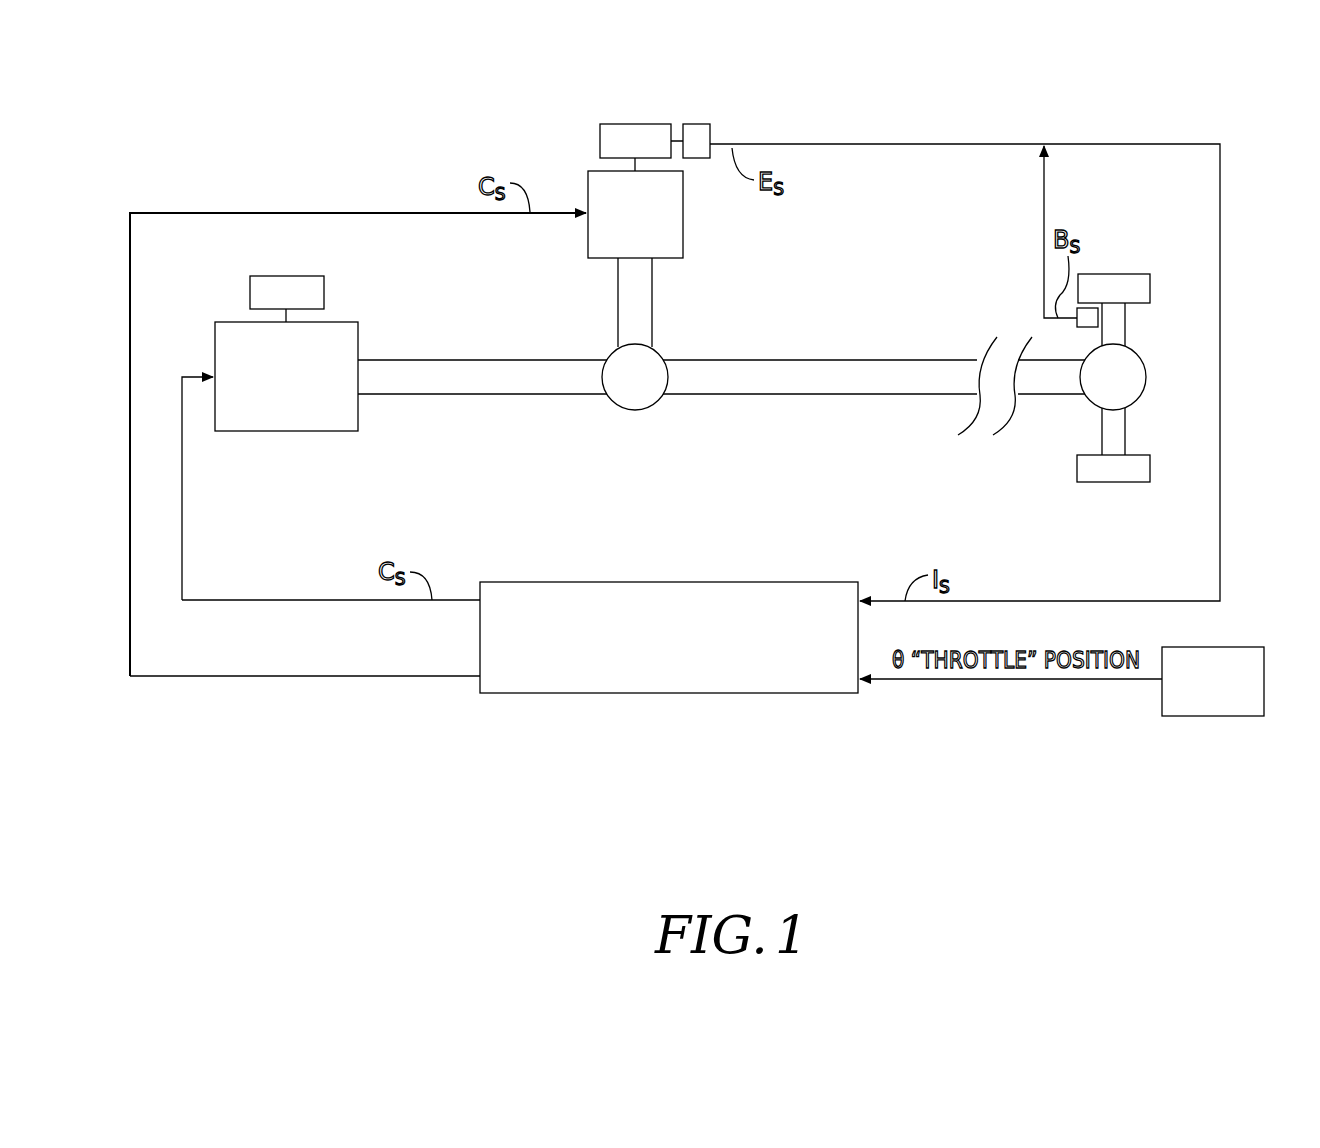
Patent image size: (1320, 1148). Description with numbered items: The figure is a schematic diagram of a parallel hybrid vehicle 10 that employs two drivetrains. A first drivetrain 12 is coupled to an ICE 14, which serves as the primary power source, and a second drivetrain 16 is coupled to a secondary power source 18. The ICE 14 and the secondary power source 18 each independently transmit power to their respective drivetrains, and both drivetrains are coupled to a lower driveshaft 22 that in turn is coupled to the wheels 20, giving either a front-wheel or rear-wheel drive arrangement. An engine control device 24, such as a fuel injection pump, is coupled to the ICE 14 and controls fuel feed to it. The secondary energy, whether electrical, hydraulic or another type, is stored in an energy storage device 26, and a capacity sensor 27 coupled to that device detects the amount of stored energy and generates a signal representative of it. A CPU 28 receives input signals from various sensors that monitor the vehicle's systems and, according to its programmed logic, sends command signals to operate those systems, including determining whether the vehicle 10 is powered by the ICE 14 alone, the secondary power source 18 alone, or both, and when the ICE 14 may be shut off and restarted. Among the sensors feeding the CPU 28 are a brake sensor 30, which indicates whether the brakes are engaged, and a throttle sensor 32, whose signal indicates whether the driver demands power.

The parallel hybrid vehicle 10 is at (1116, 122).
The first drivetrain 12 is at (527, 360).
The ICE 14 is at (271, 390).
The second drivetrain 16 is at (652, 314).
The secondary power source 18 is at (635, 214).
The wheels 20 is at (1140, 274).
The lower driveshaft 22 is at (838, 360).
The engine control device 24 is at (273, 305).
The energy storage device 26 is at (621, 154).
The capacity sensor 27 is at (700, 124).
The CPU 28 is at (643, 582).
The brake sensor 30 is at (1088, 330).
The throttle sensor 32 is at (1198, 694).